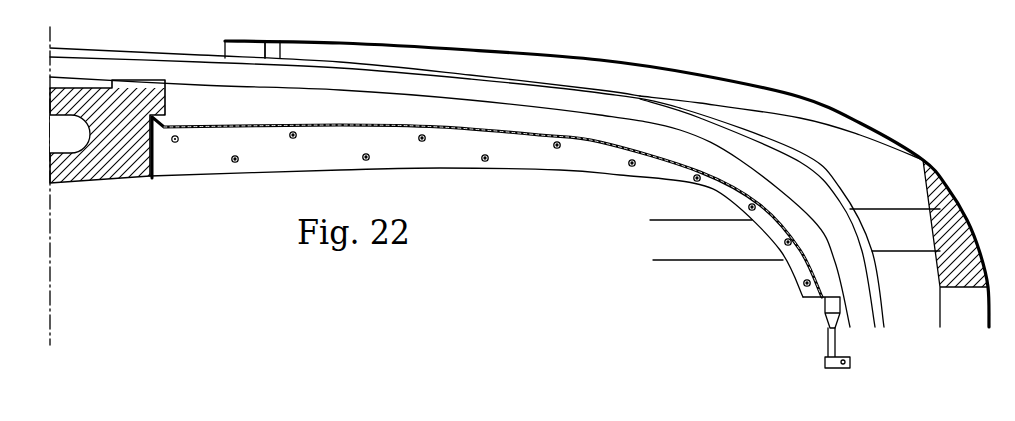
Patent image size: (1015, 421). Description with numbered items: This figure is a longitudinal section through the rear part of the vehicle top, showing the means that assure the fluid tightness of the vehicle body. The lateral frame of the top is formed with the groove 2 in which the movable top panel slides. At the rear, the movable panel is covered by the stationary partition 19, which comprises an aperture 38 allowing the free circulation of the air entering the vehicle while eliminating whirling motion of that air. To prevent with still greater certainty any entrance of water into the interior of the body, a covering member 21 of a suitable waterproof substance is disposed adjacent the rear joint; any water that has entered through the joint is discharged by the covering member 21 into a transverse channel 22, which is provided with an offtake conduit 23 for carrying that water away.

The groove 2 is at (790, 177).
The stationary partition 19 is at (263, 40).
The covering member 21 is at (237, 124).
The transverse channel 22 is at (831, 306).
The offtake conduit 23 is at (838, 352).
The aperture 38 is at (233, 52).